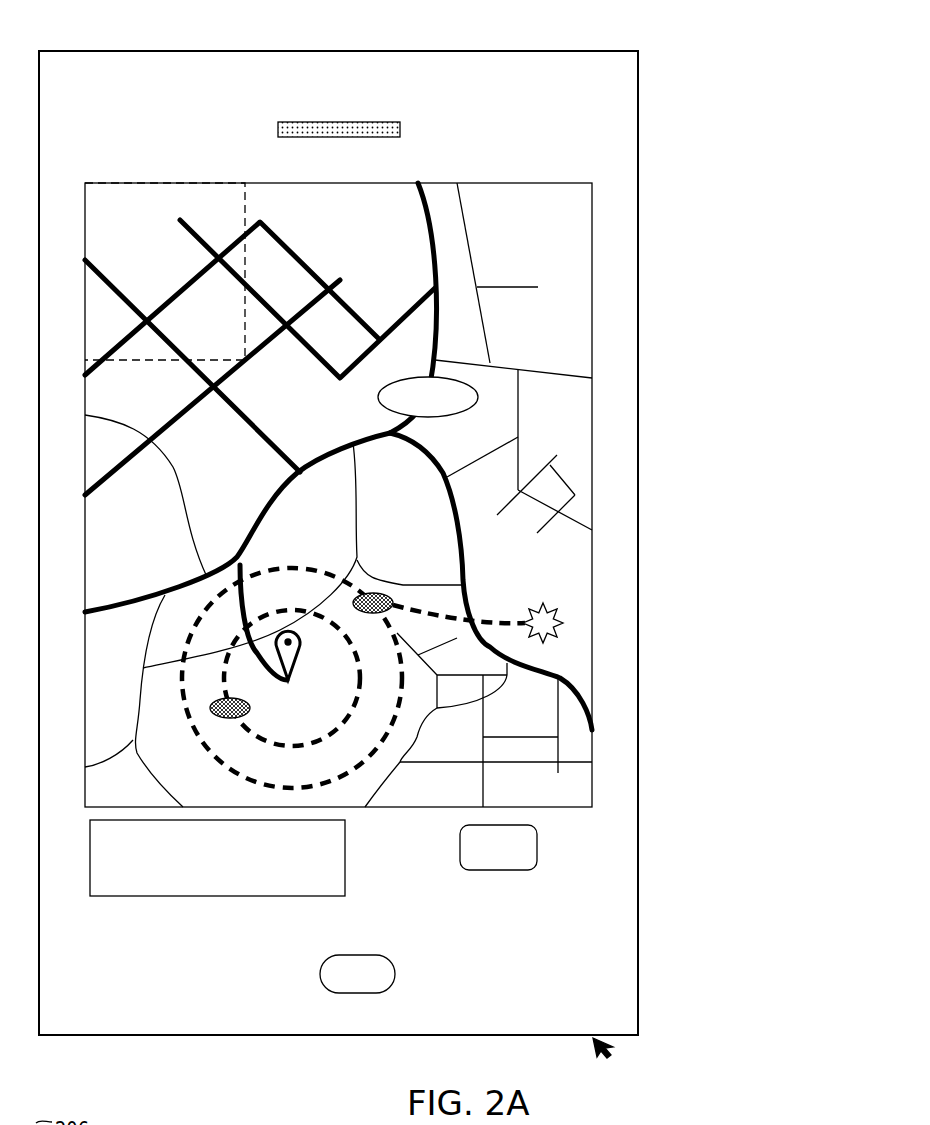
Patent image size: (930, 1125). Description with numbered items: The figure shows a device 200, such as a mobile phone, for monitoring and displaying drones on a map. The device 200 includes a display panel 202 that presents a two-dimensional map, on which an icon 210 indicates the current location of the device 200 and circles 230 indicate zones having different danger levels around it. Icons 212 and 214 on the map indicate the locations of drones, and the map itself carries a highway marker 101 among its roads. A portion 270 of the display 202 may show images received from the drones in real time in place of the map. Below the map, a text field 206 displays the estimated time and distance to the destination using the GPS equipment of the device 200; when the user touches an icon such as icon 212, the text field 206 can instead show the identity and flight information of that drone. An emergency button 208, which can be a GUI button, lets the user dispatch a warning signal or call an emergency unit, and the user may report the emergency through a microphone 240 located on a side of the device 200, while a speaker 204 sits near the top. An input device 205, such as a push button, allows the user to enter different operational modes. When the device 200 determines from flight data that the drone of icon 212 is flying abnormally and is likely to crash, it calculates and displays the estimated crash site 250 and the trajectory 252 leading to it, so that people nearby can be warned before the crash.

The device 200 is at (508, 51).
The display panel 202 is at (393, 481).
The speaker 204 is at (378, 122).
The input device 205 is at (363, 993).
The text field 206 is at (155, 897).
The emergency button 208 is at (490, 872).
The icon 210 is at (297, 647).
The icon 212 is at (380, 593).
The icon 214 is at (250, 707).
The circles 230 is at (193, 730).
The microphone 240 is at (608, 1058).
The estimated crash site 250 is at (543, 604).
The trajectory 252 is at (500, 615).
The portion 270 is at (248, 198).
The highway marker 101 is at (428, 397).